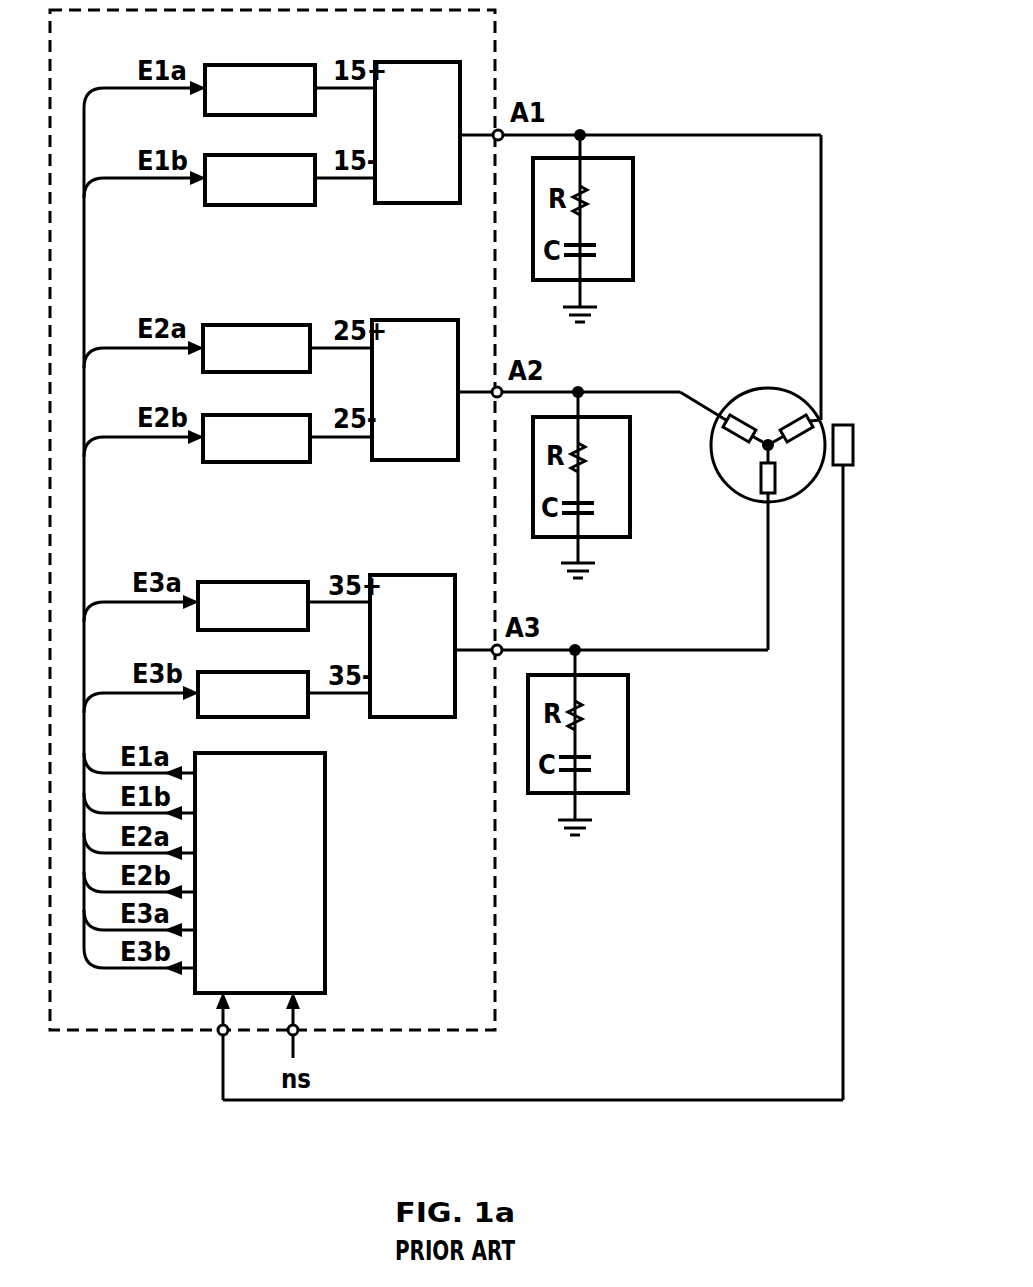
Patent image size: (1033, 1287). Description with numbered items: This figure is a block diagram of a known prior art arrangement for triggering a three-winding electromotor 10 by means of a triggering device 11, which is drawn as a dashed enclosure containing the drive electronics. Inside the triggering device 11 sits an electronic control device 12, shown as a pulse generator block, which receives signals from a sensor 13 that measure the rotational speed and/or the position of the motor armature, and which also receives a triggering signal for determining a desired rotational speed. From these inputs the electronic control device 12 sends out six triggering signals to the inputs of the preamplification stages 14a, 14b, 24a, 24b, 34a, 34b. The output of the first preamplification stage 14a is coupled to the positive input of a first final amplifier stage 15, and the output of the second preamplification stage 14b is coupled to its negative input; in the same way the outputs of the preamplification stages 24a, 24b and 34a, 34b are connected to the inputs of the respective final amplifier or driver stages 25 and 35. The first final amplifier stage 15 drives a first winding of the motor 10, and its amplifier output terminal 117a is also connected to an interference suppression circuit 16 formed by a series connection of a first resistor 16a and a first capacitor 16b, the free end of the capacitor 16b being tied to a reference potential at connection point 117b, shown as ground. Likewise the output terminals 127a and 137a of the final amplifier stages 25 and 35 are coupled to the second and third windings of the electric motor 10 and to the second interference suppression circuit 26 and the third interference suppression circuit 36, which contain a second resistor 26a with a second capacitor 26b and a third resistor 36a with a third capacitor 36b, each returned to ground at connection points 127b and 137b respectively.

The three-winding electromotor 10 is at (772, 388).
The triggering device 11 is at (493, 903).
The electronic control device 12 is at (325, 893).
The sensor 13 is at (843, 425).
The first preamplification stage 14a is at (285, 65).
The second preamplification stage 14b is at (285, 205).
The first final amplifier stage 15 is at (414, 203).
The interference suppression circuit 16 is at (633, 172).
The first resistor 16a is at (592, 200).
The first capacitor 16b is at (596, 245).
The amplifier output terminal 117a is at (582, 132).
The connection point 117b is at (583, 297).
The preamplification stage 24a is at (283, 325).
The preamplification stage 24b is at (283, 462).
The final amplifier stage 25 is at (412, 460).
The second interference suppression circuit 26 is at (630, 430).
The second resistor 26a is at (590, 457).
The second capacitor 26b is at (594, 502).
The output terminal 127a is at (580, 389).
The connection point 127b is at (581, 553).
The preamplification stage 34a is at (278, 582).
The preamplification stage 34b is at (287, 717).
The final amplifier stage 35 is at (408, 717).
The third interference suppression circuit 36 is at (628, 688).
The third resistor 36a is at (587, 715).
The third capacitor 36b is at (591, 759).
The output terminal 137a is at (577, 647).
The connection point 137b is at (578, 810).